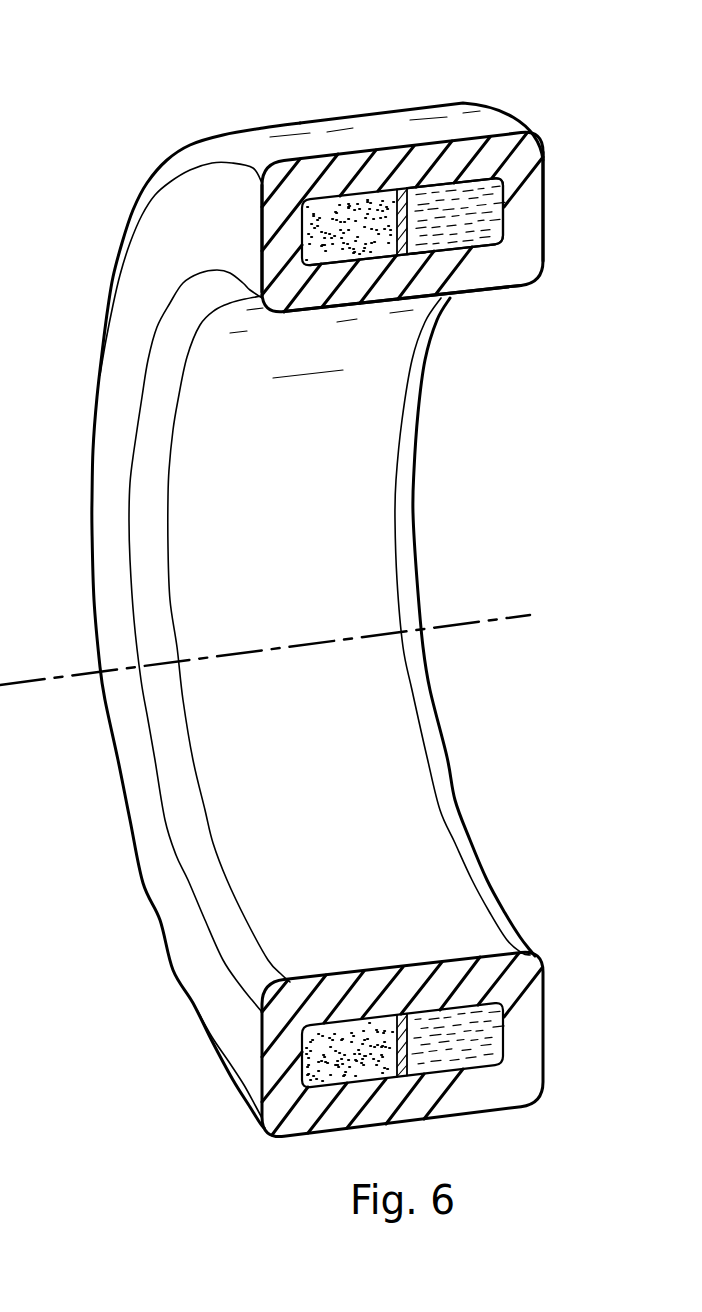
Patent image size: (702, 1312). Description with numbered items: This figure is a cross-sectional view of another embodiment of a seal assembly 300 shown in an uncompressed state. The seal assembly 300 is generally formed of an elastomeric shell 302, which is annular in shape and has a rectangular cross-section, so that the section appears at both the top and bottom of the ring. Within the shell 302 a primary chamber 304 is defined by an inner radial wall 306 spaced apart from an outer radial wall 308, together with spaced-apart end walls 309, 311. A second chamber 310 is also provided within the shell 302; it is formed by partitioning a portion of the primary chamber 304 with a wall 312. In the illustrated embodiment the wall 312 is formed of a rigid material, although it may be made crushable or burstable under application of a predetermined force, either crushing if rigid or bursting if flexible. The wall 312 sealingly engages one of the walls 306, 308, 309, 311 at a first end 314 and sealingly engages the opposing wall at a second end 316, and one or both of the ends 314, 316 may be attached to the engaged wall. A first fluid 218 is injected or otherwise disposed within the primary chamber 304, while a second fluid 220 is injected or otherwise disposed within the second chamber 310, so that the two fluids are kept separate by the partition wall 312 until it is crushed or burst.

The seal assembly 300 is at (150, 60).
The elastomeric shell 302 is at (105, 347).
The primary chamber 304 is at (345, 185).
The inner radial wall 306 is at (370, 292).
The outer radial wall 308 is at (413, 157).
The end wall 309 is at (537, 189).
The second chamber 310 is at (487, 215).
The end wall 311 is at (262, 228).
The wall 312 is at (413, 212).
The first end 314 is at (410, 250).
The second end 316 is at (400, 185).
The first fluid 218 is at (320, 256).
The second fluid 220 is at (493, 1040).